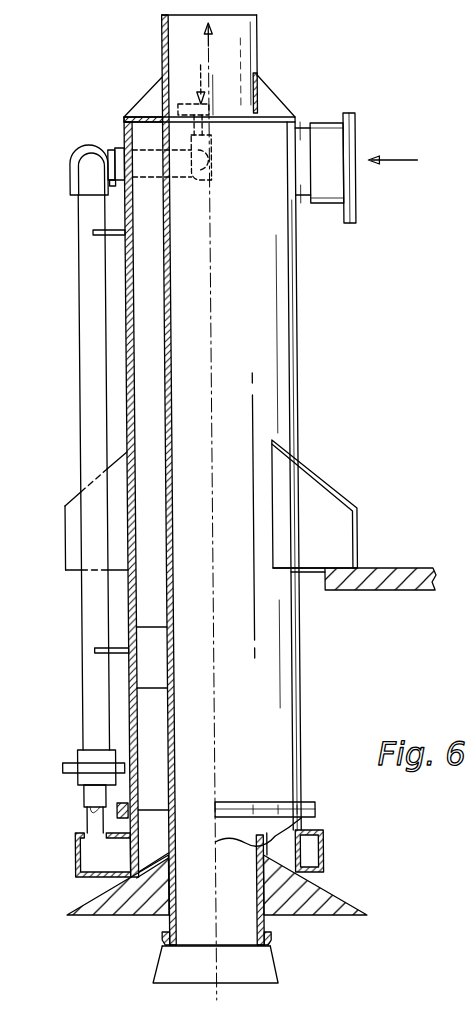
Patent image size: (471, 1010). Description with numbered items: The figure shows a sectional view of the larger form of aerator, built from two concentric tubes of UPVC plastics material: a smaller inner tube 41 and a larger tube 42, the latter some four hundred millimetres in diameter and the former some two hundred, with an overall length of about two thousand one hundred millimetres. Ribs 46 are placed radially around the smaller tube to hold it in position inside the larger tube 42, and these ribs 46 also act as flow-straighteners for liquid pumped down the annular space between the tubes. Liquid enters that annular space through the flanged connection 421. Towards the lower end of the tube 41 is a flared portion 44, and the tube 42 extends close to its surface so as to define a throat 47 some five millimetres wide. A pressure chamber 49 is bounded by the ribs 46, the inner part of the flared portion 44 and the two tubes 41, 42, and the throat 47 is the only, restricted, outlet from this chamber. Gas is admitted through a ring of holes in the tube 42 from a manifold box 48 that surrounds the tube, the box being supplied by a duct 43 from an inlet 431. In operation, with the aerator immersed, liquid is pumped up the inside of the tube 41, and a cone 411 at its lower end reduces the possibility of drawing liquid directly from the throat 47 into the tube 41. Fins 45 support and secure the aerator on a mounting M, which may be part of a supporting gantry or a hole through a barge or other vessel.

The tube 41 is at (160, 56).
The cone 411 is at (165, 963).
The larger tube 42 is at (123, 130).
The flanged connection 421 is at (354, 140).
The inlet 431 is at (176, 112).
The duct 43 is at (76, 292).
The flared portion 44 is at (129, 910).
The fins 45 is at (60, 522).
The ribs 46 is at (139, 640).
The throat 47 is at (162, 862).
The manifold box 48 is at (61, 850).
The pressure chamber 49 is at (270, 840).
The mounting M is at (405, 568).